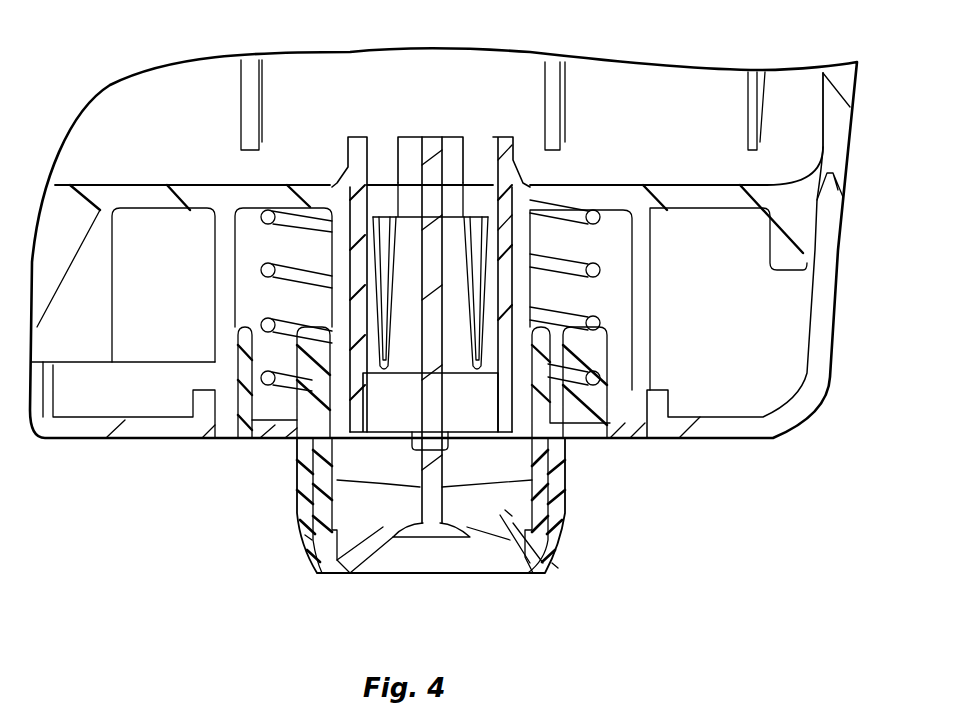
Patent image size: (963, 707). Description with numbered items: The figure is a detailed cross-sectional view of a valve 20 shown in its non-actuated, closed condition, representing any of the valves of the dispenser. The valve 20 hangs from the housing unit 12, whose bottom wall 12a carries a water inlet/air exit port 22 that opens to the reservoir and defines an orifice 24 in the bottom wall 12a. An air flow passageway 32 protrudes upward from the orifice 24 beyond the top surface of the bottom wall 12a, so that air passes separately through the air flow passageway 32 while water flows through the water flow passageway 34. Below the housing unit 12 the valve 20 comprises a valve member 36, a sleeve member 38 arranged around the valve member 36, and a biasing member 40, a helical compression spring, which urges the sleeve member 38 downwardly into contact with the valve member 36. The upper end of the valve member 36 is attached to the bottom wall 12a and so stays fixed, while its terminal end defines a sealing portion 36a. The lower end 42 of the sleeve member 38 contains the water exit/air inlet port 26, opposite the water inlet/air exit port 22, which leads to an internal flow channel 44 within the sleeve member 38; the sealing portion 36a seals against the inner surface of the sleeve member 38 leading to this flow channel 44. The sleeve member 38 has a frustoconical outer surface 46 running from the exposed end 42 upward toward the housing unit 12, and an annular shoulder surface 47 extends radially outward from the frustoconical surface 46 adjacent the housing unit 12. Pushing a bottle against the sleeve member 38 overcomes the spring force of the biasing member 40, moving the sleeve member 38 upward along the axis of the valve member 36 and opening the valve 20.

The housing unit 12 is at (800, 412).
The bottom wall 12a is at (702, 198).
The valve 20 is at (255, 588).
The water inlet/air exit port 22 is at (477, 147).
The orifice 24 is at (400, 192).
The water exit/air inlet port 26 is at (517, 560).
The air flow passageway 32 is at (453, 143).
The water flow passageway 34 is at (480, 240).
The valve member 36 is at (413, 487).
The sealing portion 36a is at (503, 553).
The sleeve member 38 is at (558, 502).
The biasing member 40 is at (600, 266).
The lower end 42 is at (323, 577).
The internal flow channel 44 is at (507, 512).
The frustoconical outer surface 46 is at (303, 537).
The annular shoulder surface 47 is at (270, 433).